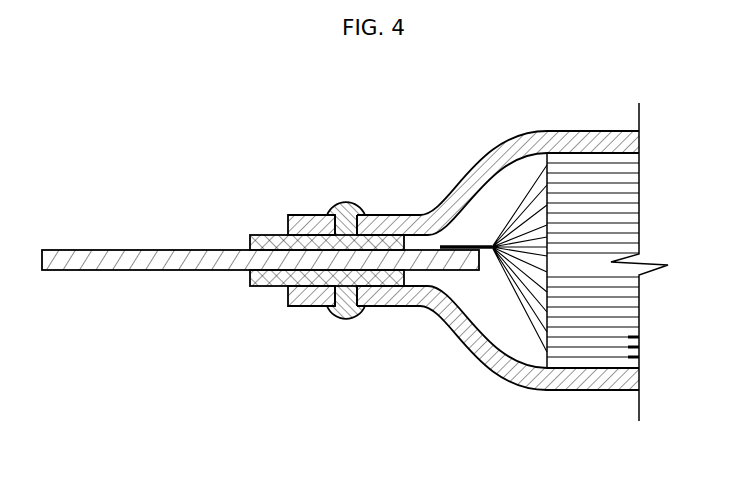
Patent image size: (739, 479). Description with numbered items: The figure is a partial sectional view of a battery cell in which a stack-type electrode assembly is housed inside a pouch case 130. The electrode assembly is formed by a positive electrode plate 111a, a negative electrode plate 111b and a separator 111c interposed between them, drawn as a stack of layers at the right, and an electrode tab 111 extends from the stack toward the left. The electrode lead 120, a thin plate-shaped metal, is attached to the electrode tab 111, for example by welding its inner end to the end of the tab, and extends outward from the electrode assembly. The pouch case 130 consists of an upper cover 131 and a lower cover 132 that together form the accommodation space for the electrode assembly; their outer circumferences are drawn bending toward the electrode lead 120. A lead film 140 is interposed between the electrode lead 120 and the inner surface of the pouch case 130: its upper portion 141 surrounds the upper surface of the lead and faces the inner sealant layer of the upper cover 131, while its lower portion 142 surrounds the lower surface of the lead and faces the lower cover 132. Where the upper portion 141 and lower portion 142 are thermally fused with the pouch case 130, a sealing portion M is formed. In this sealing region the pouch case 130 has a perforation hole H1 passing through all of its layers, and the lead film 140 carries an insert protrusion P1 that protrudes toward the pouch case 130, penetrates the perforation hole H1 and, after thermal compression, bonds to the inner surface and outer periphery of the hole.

The electrode lead 120 is at (125, 250).
The lead film 140 is at (309, 254).
The upper portion 141 is at (263, 245).
The lower portion 142 is at (266, 286).
The pouch case 130 is at (463, 249).
The upper cover 131 is at (577, 132).
The lower cover 132 is at (578, 391).
The sealing portion M is at (383, 214).
The insert protrusion P1 is at (333, 204).
The perforation hole H1 is at (352, 203).
The electrode tab 111 is at (485, 251).
The positive electrode plate 111a is at (631, 337).
The negative electrode plate 111b is at (631, 357).
The separator 111c is at (631, 347).